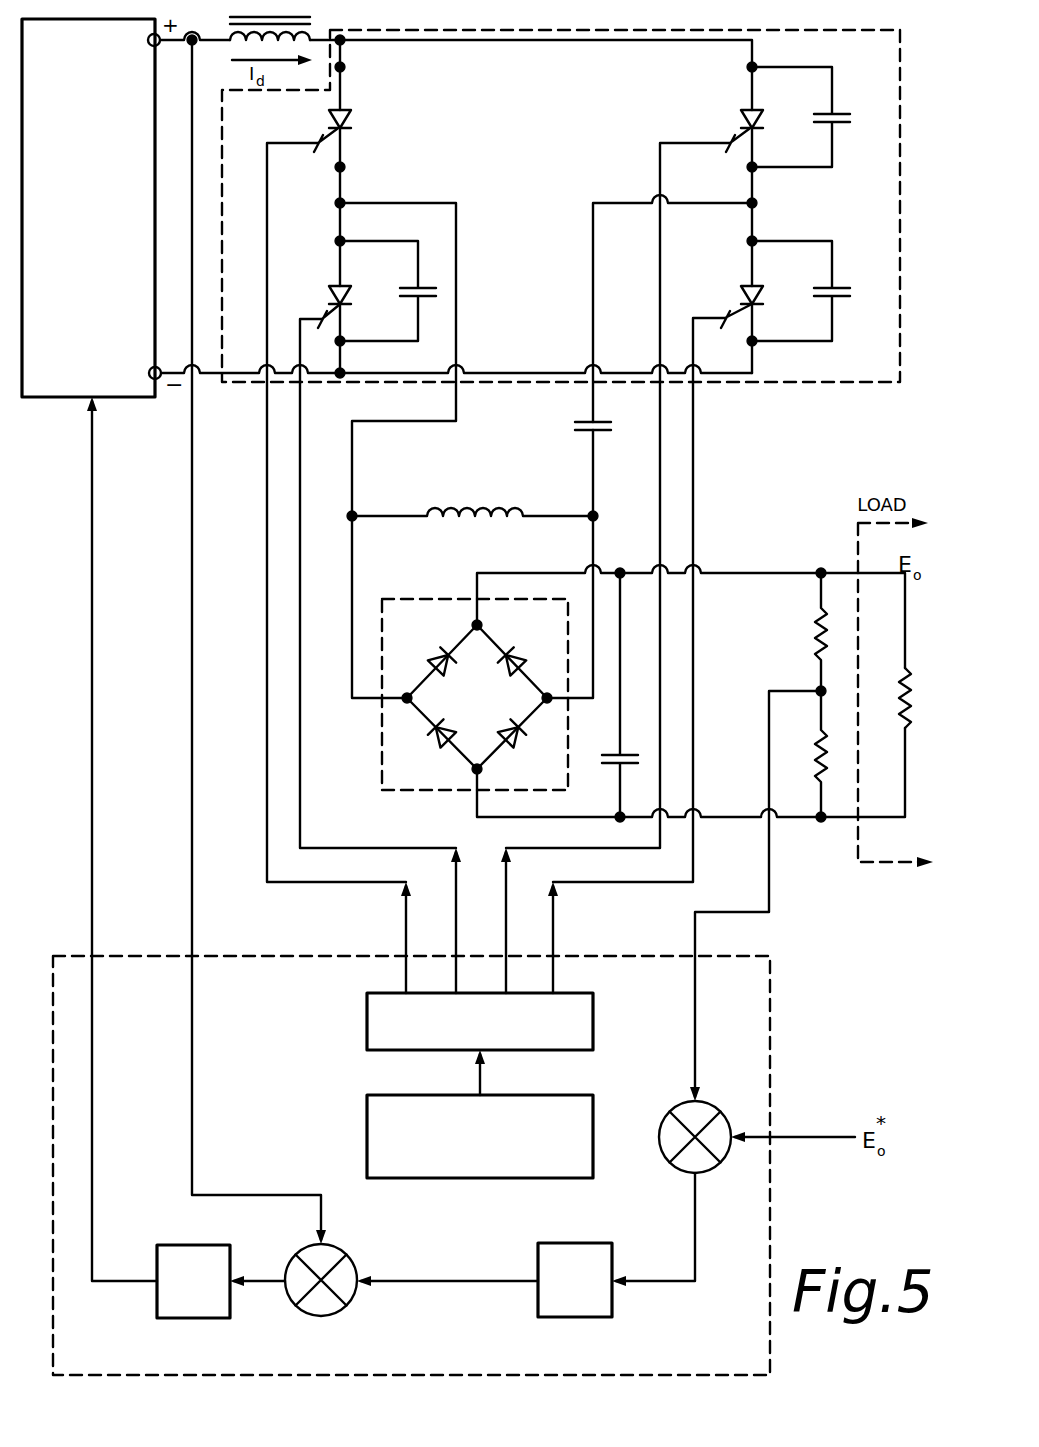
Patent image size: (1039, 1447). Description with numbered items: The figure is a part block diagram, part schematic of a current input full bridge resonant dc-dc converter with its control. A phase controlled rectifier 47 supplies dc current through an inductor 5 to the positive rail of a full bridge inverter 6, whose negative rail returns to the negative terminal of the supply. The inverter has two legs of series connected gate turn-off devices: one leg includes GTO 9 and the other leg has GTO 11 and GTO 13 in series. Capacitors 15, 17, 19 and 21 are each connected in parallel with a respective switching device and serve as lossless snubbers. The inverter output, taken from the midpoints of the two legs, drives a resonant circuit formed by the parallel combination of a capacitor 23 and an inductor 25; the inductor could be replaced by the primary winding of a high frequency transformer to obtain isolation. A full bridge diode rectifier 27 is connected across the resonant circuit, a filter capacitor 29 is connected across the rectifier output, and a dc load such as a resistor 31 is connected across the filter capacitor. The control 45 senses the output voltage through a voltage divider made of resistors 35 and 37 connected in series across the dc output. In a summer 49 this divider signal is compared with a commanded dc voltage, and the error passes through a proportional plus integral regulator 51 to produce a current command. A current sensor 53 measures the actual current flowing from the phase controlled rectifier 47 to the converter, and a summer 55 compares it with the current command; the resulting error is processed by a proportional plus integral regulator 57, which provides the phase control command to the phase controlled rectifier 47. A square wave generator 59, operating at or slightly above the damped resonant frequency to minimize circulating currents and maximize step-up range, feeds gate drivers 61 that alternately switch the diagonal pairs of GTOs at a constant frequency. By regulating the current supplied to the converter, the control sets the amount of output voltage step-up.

The inductor 5 is at (306, 38).
The full bridge inverter 6 is at (900, 190).
The GTO 9 is at (330, 300).
The GTO 11 is at (744, 124).
The GTO 13 is at (742, 304).
The capacitor 15 is at (420, 112).
The capacitor 17 is at (423, 286).
The capacitor 19 is at (840, 116).
The capacitor 21 is at (844, 290).
The capacitor 23 is at (586, 422).
The inductor 25 is at (482, 510).
The full bridge diode rectifier 27 is at (408, 598).
The filter capacitor 29 is at (628, 752).
The resistor 31 is at (902, 700).
The resistor 35 is at (816, 640).
The resistor 37 is at (816, 752).
The control 45 is at (772, 1016).
The phase controlled rectifier 47 is at (116, 400).
The summer 49 is at (674, 1108).
The proportional plus integral regulator 51 is at (548, 1246).
The current sensor 53 is at (192, 34).
The summer 55 is at (344, 1254).
The proportional plus integral regulator 57 is at (166, 1246).
The square wave generator 59 is at (366, 1128).
The gate drivers 61 is at (366, 1018).